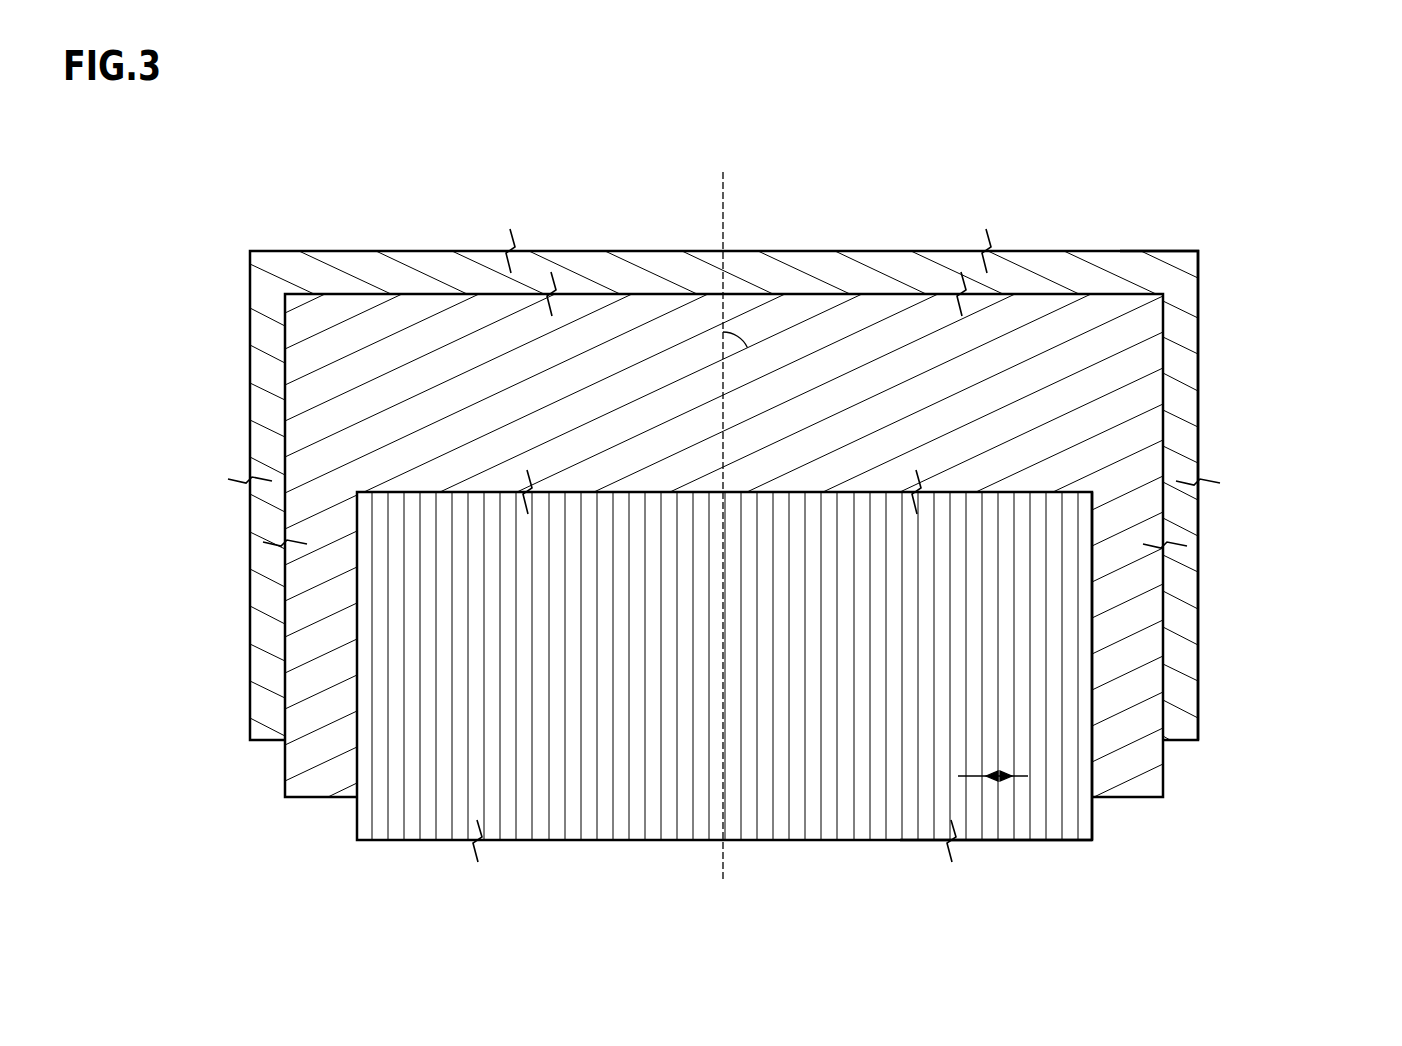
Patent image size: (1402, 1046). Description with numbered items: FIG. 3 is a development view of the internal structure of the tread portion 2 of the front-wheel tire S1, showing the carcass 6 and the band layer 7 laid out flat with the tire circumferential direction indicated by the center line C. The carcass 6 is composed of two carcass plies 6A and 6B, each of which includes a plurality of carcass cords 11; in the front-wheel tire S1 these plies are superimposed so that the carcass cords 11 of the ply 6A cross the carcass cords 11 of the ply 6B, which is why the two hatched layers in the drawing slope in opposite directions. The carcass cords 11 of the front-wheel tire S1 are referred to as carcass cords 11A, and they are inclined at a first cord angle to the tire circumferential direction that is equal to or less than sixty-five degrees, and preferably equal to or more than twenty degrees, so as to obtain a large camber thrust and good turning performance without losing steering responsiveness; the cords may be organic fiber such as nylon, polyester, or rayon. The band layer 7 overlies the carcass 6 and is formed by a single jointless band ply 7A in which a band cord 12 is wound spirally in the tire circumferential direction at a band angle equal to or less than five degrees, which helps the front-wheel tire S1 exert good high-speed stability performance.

The tread portion 2 is at (1080, 205).
The front-wheel tire S1 is at (1207, 172).
The center line C is at (722, 512).
The carcass 6 is at (1358, 327).
The carcass ply 6A is at (1180, 367).
The carcass ply 6B is at (1137, 442).
The carcass cords 11 is at (1170, 520).
The carcass cords 11A is at (1100, 654).
The band layer 7 is at (1063, 813).
The jointless band ply 7A is at (1080, 882).
The band cord 12 is at (837, 782).